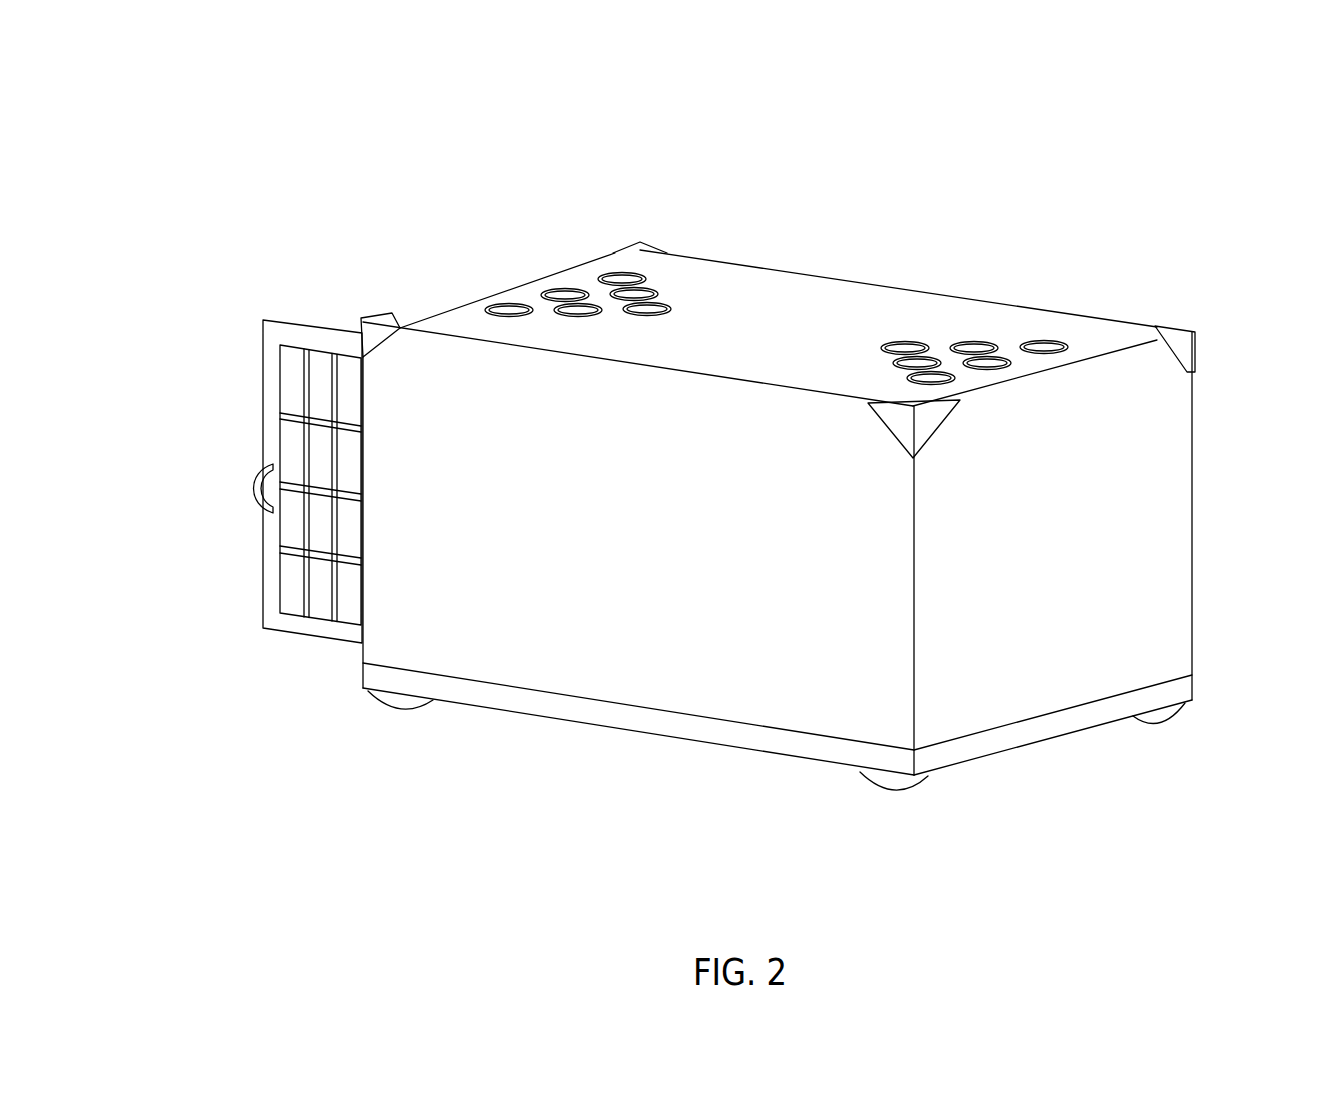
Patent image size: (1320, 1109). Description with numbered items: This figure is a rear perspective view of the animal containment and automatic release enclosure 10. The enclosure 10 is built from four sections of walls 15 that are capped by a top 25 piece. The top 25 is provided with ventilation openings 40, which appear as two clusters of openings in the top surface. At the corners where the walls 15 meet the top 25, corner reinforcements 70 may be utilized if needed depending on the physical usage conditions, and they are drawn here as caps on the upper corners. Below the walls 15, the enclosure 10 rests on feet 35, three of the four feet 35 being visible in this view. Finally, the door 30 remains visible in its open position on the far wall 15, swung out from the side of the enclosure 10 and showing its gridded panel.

The animal containment and automatic release enclosure 10 is at (188, 230).
The walls 15 is at (1065, 527).
The top 25 is at (790, 282).
The door 30 is at (273, 391).
The feet 35 is at (395, 702).
The ventilation openings 40 is at (565, 294).
The corner reinforcements 70 is at (386, 322).